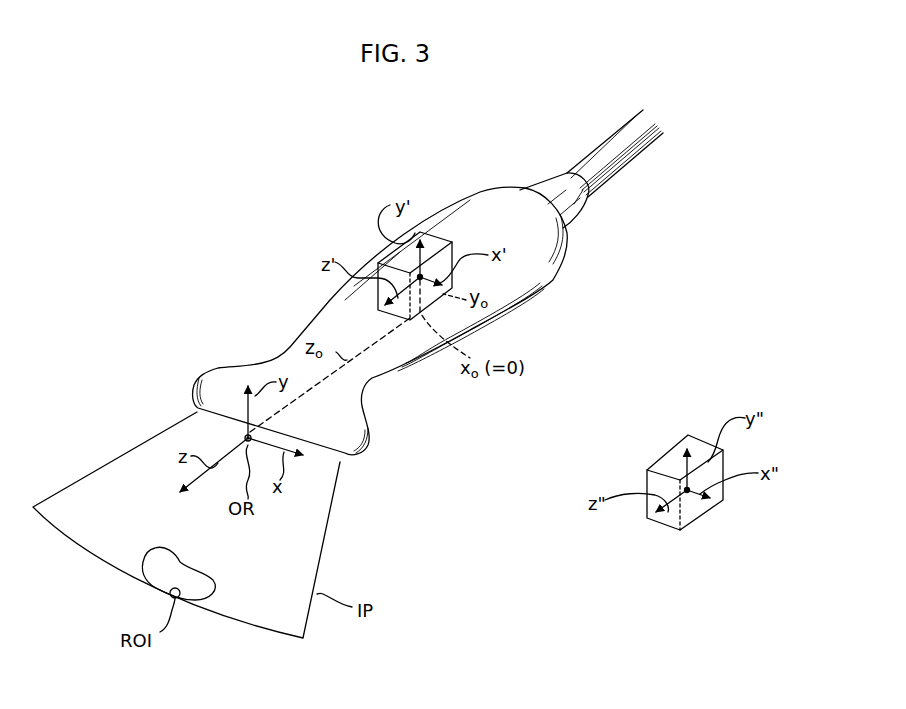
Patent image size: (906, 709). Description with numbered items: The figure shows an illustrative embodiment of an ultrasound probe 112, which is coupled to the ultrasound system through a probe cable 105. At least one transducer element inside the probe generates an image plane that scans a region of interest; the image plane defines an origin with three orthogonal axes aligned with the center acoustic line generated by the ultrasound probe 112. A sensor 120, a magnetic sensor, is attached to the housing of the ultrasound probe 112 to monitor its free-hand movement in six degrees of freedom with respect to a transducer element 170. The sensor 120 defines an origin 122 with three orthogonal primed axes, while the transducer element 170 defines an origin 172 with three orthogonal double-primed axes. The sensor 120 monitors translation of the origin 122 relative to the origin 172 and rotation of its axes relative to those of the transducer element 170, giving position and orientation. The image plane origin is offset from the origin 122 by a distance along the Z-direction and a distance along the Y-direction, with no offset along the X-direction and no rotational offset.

The probe cable 105 is at (633, 145).
The ultrasound probe 112 is at (548, 262).
The sensor 120 is at (433, 233).
The origin 122 is at (452, 250).
The transducer element 170 is at (650, 468).
The origin 172 is at (695, 515).